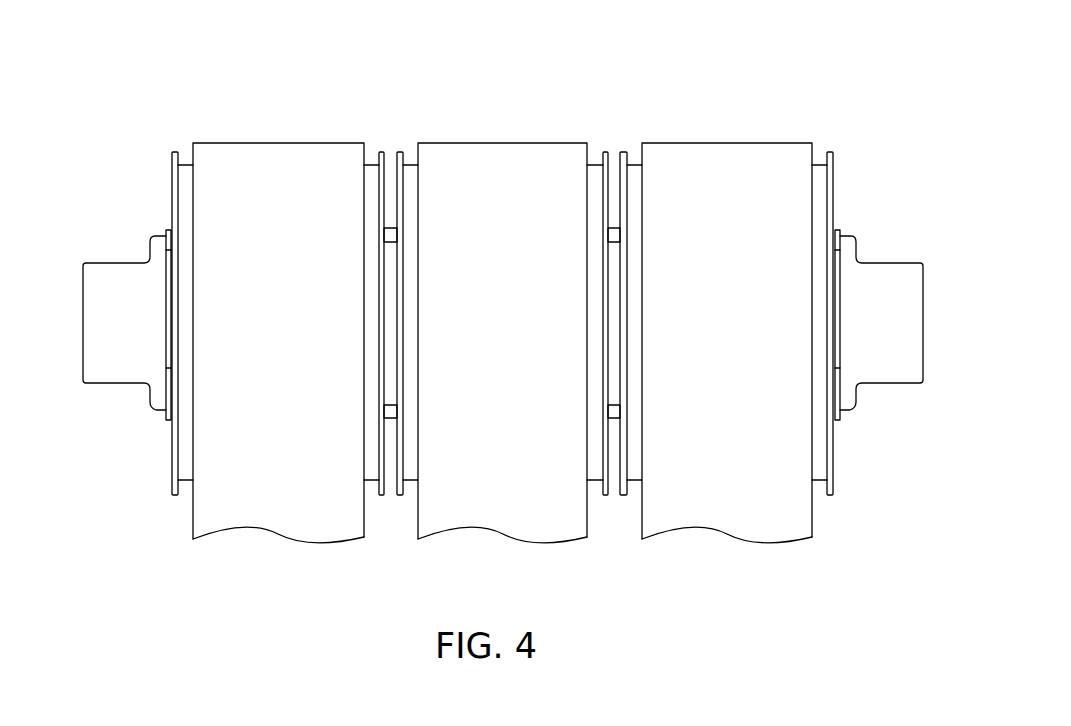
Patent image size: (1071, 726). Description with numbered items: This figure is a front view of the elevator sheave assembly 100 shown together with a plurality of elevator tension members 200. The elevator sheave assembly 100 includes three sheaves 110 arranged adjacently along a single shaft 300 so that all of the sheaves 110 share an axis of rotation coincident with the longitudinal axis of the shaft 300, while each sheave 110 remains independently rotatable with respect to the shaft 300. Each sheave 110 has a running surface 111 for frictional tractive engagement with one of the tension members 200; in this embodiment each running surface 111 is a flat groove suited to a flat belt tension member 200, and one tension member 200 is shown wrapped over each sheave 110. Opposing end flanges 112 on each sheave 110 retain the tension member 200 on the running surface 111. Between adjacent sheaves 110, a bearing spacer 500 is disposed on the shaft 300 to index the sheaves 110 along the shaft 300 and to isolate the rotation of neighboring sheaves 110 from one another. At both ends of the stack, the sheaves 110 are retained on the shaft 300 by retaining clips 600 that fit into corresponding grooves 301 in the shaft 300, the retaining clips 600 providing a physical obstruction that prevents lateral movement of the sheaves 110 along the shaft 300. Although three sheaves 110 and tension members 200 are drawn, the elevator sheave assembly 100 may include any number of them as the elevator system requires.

The elevator sheave assembly 100 is at (163, 82).
The sheave 110 is at (172, 442).
The running surface 111 is at (187, 165).
The end flange 112 is at (176, 495).
The elevator tension member 200 is at (280, 143).
The shaft 300 is at (933, 310).
The groove 301 is at (166, 325).
The bearing spacer 500 is at (391, 228).
The retaining clip 600 is at (166, 230).